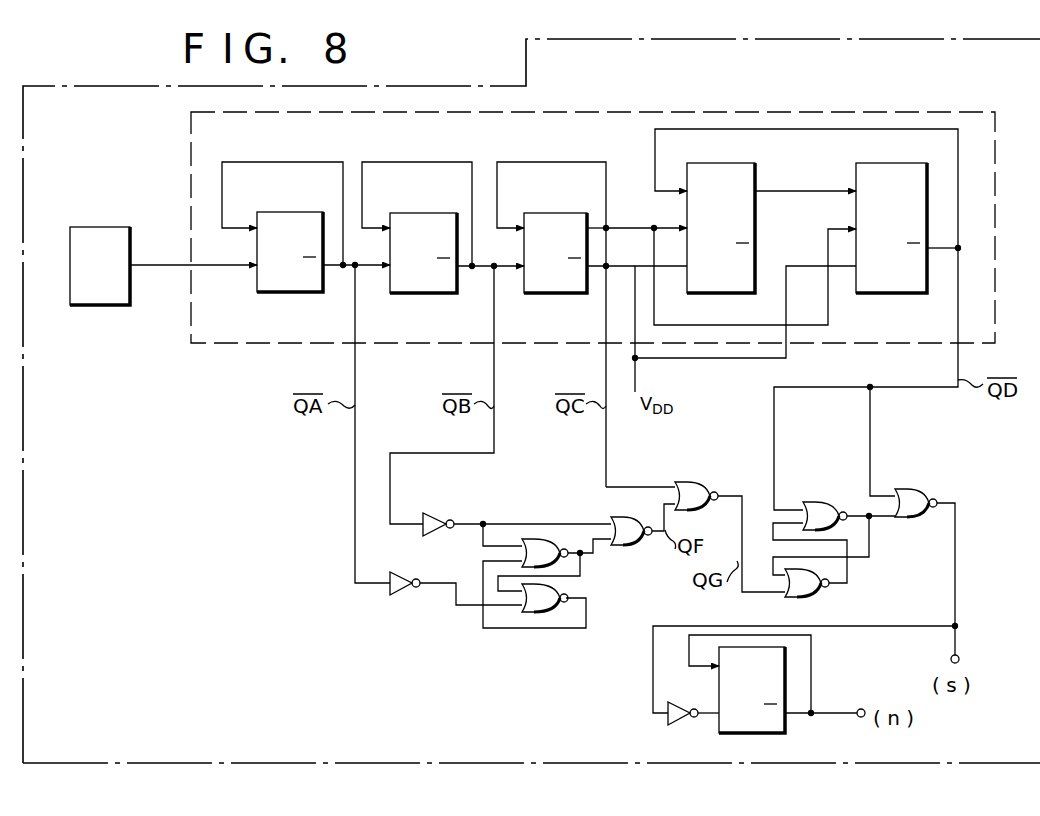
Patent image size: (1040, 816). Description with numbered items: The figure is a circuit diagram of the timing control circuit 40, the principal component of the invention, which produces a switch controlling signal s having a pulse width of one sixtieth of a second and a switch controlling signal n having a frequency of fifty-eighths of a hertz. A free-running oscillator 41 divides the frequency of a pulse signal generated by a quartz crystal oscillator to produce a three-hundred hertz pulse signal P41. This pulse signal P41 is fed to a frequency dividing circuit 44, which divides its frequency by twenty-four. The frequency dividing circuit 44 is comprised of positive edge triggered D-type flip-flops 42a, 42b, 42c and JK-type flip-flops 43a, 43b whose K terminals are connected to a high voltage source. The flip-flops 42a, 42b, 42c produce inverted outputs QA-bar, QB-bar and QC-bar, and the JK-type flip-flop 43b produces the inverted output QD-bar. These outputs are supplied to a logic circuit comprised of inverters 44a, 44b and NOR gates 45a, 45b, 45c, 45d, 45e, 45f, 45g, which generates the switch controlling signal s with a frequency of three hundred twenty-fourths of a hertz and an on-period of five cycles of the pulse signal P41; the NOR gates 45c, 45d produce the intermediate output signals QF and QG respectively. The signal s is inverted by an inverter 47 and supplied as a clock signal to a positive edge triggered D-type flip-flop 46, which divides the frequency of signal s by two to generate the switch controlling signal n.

The timing control circuit 40 is at (455, 86).
The free-running oscillator 41 is at (94, 296).
The pulse signal P41 is at (162, 268).
The frequency dividing circuit 44 is at (625, 112).
The D-type flip-flop 42a is at (292, 223).
The D-type flip-flop 42b is at (418, 223).
The D-type flip-flop 42c is at (552, 223).
The JK-type flip-flop 43a is at (735, 178).
The JK-type flip-flop 43b is at (898, 178).
The inverter 44a is at (435, 514).
The inverter 44b is at (398, 588).
The NOR gate 45a is at (539, 544).
The NOR gate 45b is at (541, 614).
The NOR gate 45c is at (627, 538).
The NOR gate 45d is at (697, 488).
The NOR gate 45e is at (821, 505).
The NOR gate 45f is at (806, 585).
The NOR gate 45g is at (911, 493).
The D-type flip-flop 46 is at (718, 725).
The inverter 47 is at (676, 705).